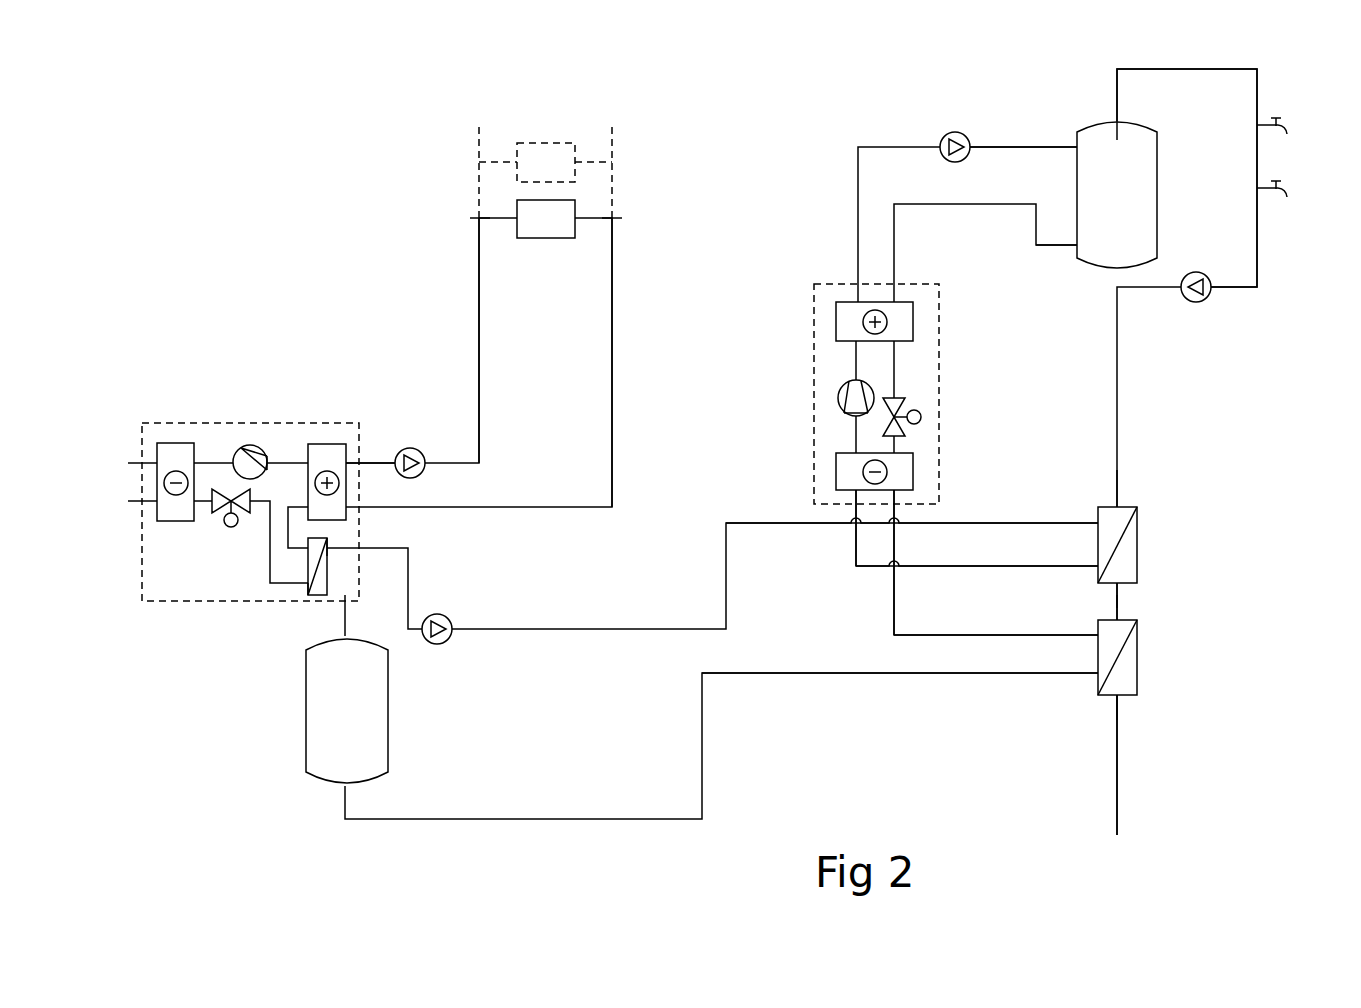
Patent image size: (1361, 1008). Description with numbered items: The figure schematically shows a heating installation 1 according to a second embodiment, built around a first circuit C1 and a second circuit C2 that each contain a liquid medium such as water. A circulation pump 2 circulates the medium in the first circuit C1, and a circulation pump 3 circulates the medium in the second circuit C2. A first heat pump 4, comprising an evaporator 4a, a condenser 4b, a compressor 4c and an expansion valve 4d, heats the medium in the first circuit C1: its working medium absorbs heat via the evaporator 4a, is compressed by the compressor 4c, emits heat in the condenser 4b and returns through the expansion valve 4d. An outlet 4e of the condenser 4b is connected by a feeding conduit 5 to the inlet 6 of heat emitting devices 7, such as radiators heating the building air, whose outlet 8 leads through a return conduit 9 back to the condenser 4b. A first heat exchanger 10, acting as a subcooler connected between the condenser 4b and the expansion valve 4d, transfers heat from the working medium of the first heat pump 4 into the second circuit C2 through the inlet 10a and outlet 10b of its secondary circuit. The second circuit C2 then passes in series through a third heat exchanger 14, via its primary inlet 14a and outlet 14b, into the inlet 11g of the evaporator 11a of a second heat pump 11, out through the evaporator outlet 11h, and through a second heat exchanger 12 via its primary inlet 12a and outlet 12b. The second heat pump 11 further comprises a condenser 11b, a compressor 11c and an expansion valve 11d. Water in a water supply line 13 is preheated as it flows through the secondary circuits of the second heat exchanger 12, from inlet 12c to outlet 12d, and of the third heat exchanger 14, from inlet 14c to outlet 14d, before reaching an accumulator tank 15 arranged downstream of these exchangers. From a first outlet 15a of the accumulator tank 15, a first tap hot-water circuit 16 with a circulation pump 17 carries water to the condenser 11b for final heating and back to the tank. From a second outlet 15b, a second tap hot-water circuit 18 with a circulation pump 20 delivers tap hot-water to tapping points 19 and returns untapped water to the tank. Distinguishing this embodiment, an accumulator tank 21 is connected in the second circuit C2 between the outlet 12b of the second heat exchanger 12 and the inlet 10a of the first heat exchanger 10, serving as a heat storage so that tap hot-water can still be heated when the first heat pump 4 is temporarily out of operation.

The heating installation 1 is at (298, 835).
The circulation pump 2 is at (411, 447).
The circulation pump 3 is at (440, 613).
The first heat pump 4 is at (222, 423).
The evaporator 4a is at (178, 441).
The condenser 4b is at (325, 443).
The compressor 4c is at (257, 447).
The expansion valve 4d is at (221, 508).
The outlet 4e is at (352, 462).
The feeding conduit 5 is at (480, 344).
The inlet 6 is at (478, 218).
The heat emitting devices 7 is at (548, 143).
The outlet 8 is at (615, 218).
The return conduit 9 is at (614, 300).
The first heat exchanger 10 is at (313, 590).
The inlet 10a is at (321, 592).
The outlet 10b is at (338, 557).
The second heat pump 11 is at (820, 349).
The evaporator 11a is at (907, 468).
The condenser 11b is at (905, 320).
The compressor 11c is at (840, 398).
The expansion valve 11d is at (898, 408).
The inlet 11g is at (850, 492).
The outlet 11h is at (900, 496).
The second heat exchanger 12 is at (1138, 660).
The inlet 12a is at (1095, 632).
The outlet 12b is at (1095, 683).
The inlet 12c is at (1122, 697).
The outlet 12d is at (1120, 615).
The water supply line 13 is at (1122, 790).
The third heat exchanger 14 is at (1138, 549).
The inlet 14a is at (1095, 521).
The outlet 14b is at (1095, 575).
The inlet 14c is at (1120, 586).
The outlet 14d is at (1122, 506).
The accumulator tank 15 is at (1150, 205).
The first outlet 15a is at (1074, 251).
The second outlet 15b is at (1122, 120).
The first tap hot-water circuit 16 is at (1013, 133).
The circulation pump 17 is at (947, 136).
The second tap hot-water circuit 18 is at (1104, 94).
The tapping points 19 is at (1285, 124).
The circulation pump 20 is at (1200, 301).
The accumulator tank 21 is at (386, 724).
The first circuit C1 is at (469, 307).
The second circuit C2 is at (575, 613).